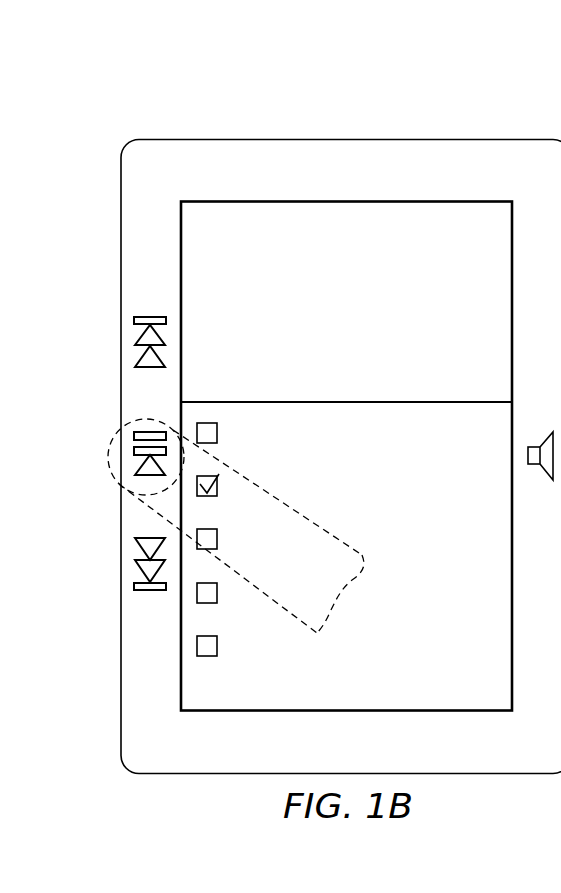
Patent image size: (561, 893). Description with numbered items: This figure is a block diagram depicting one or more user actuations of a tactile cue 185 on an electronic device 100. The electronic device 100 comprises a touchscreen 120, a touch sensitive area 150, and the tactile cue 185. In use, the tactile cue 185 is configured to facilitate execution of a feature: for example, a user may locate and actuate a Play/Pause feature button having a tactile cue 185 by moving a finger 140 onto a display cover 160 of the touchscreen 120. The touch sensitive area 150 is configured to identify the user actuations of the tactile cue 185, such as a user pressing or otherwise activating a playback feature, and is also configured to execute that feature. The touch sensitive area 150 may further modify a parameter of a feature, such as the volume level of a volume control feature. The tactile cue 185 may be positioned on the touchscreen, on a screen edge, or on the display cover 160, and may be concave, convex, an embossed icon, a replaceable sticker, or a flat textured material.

The electronic device 100 is at (207, 89).
The touchscreen 120 is at (354, 200).
The display cover 160 is at (485, 139).
The touch sensitive area 150 is at (367, 340).
The tactile cue 185 is at (149, 477).
The finger 140 is at (362, 568).